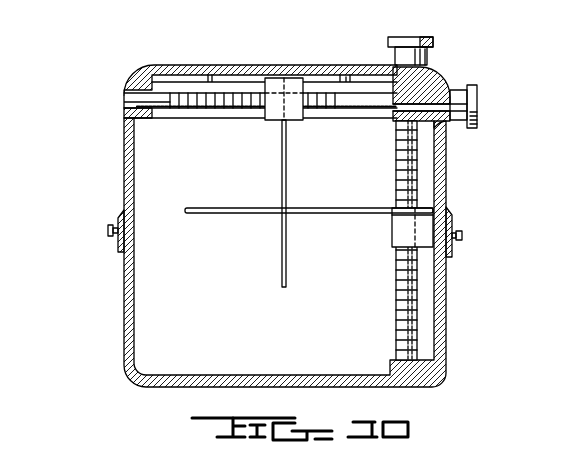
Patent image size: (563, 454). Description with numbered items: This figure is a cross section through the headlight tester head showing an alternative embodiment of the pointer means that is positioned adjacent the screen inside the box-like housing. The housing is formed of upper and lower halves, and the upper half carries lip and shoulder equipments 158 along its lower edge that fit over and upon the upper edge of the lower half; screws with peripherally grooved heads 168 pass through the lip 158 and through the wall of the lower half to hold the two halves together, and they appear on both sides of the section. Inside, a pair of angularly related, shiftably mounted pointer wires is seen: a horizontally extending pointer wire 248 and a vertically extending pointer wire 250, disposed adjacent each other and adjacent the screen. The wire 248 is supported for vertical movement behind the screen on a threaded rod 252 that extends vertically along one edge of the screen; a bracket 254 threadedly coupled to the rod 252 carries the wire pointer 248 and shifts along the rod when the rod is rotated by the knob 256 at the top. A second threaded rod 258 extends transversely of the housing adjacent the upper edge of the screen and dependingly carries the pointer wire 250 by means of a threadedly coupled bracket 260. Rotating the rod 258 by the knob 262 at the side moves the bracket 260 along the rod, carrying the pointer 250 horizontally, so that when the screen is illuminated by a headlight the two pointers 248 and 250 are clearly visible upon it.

The lip and shoulder equipments 158 is at (126, 224).
The peripherally grooved heads 168 is at (110, 232).
The horizontally extending pointer wire 248 is at (262, 213).
The vertically extending pointer wire 250 is at (286, 196).
The threaded rod 252 is at (404, 148).
The bracket 254 is at (392, 228).
The knob 256 is at (422, 38).
The second threaded rod 258 is at (222, 104).
The bracket 260 is at (275, 111).
The knob 262 is at (479, 112).